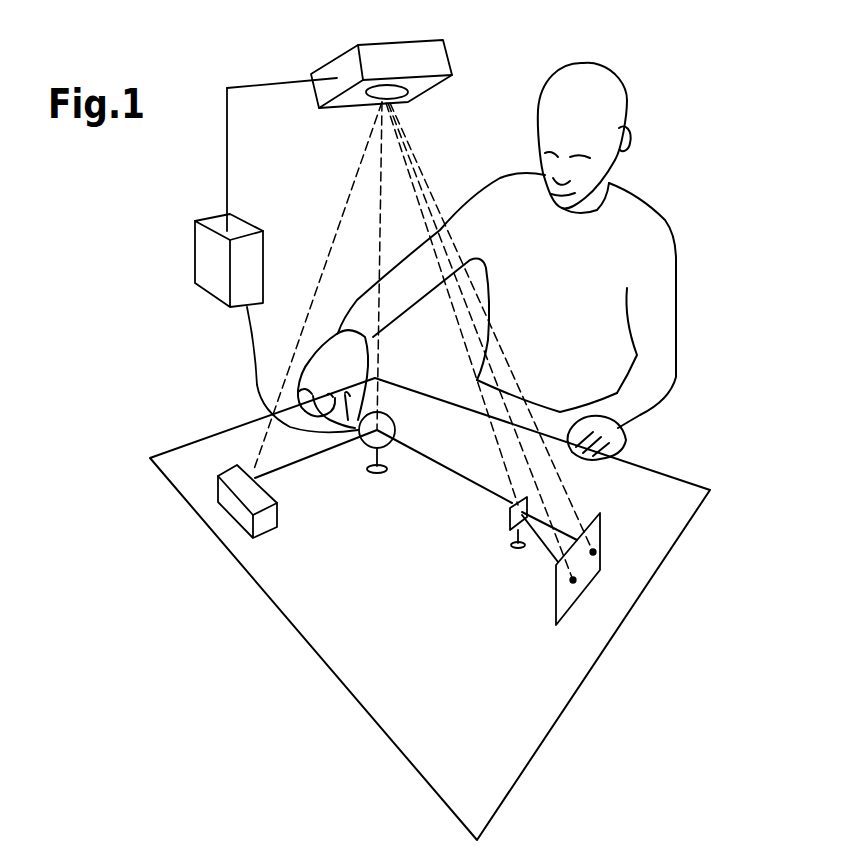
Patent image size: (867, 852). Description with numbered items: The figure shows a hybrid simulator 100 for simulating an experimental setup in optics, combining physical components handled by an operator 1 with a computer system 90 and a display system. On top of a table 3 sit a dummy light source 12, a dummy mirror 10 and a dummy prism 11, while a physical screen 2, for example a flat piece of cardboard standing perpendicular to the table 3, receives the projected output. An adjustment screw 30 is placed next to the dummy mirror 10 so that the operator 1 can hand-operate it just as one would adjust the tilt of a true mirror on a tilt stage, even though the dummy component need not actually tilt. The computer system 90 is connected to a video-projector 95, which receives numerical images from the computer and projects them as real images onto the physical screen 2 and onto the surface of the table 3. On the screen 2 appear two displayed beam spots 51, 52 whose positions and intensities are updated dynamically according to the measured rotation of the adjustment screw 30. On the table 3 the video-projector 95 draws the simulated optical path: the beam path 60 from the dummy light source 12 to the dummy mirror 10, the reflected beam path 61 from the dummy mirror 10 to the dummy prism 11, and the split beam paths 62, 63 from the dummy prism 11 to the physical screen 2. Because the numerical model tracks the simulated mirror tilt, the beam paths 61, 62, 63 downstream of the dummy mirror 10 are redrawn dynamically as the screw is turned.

The operator 1 is at (657, 186).
The physical screen 2 is at (553, 607).
The table 3 is at (183, 443).
The dummy mirror 10 is at (396, 421).
The dummy prism 11 is at (508, 520).
The dummy light source 12 is at (217, 483).
The adjustment screw 30 is at (363, 360).
The displayed beam spot 51 is at (576, 580).
The displayed beam spot 52 is at (596, 552).
The beam path 60 is at (322, 464).
The reflected beam path 61 is at (424, 457).
The split beam path 62 is at (560, 545).
The split beam path 63 is at (550, 552).
The computer system 90 is at (200, 258).
The video-projector 95 is at (342, 65).
The hybrid simulator 100 is at (137, 330).